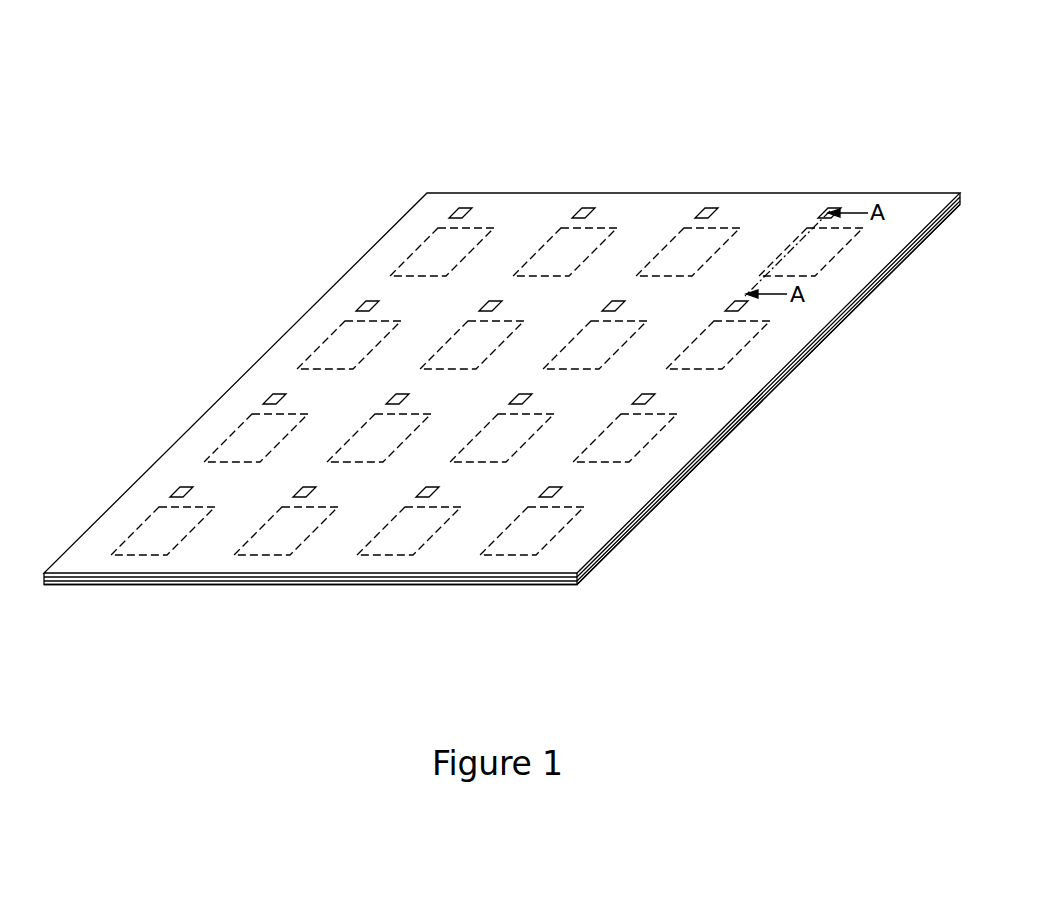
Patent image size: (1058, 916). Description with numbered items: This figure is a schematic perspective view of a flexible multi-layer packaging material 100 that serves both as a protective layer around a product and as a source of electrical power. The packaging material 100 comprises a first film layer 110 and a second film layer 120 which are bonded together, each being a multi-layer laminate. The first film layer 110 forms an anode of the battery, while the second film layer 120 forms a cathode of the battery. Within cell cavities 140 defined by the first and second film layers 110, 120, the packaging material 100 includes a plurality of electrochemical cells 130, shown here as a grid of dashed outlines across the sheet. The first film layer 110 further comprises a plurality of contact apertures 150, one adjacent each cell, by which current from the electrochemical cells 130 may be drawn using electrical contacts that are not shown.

The flexible multi-layer packaging material 100 is at (403, 121).
The first film layer 110 is at (515, 577).
The second film layer 120 is at (575, 582).
The electrochemical cells 130 is at (567, 252).
The cell cavities 140 is at (682, 229).
The contact apertures 150 is at (710, 210).